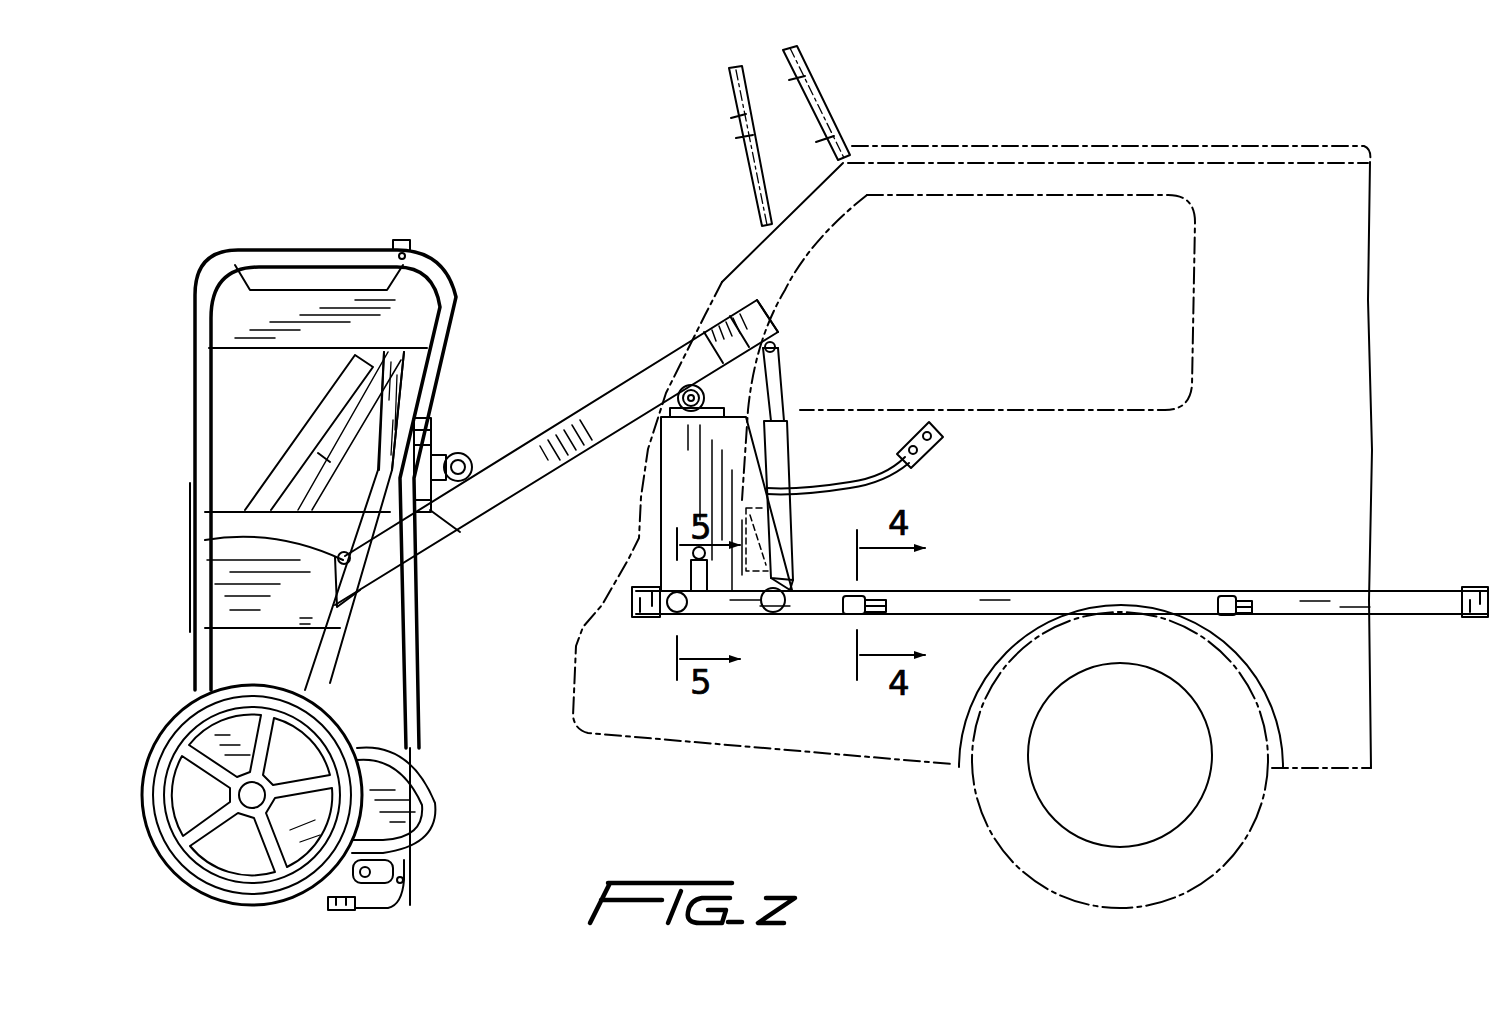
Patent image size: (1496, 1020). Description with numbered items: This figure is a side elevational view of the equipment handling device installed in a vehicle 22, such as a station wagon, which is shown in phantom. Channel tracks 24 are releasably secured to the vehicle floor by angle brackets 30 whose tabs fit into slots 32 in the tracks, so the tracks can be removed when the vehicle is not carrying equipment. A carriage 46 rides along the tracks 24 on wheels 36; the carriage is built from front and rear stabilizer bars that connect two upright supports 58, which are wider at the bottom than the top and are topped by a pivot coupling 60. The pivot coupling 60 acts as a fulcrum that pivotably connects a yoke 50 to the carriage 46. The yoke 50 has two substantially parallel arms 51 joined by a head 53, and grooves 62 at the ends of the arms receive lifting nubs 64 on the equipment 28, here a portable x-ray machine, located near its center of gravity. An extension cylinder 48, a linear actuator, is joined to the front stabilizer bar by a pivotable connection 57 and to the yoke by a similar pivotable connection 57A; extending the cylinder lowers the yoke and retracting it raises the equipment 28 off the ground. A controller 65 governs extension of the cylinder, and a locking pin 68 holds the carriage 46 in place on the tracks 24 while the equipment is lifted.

The vehicle 22 is at (1100, 147).
The channel tracks 24 is at (1036, 591).
The equipment 28 is at (318, 240).
The angle brackets 30 is at (852, 610).
The slots 32 is at (882, 598).
The wheels 36 is at (686, 606).
The carriage 46 is at (658, 517).
The extension cylinder 48 is at (797, 440).
The yoke 50 is at (608, 396).
The arms 51 is at (460, 520).
The head 53 is at (770, 302).
The pivotable connection 57 is at (793, 587).
The pivotable connection 57A is at (777, 345).
The upright supports 58 is at (676, 463).
The pivot coupling 60 is at (689, 388).
The grooves 62 is at (350, 568).
The lifting nubs 64 is at (206, 538).
The controller 65 is at (937, 428).
The locking pin 68 is at (691, 578).